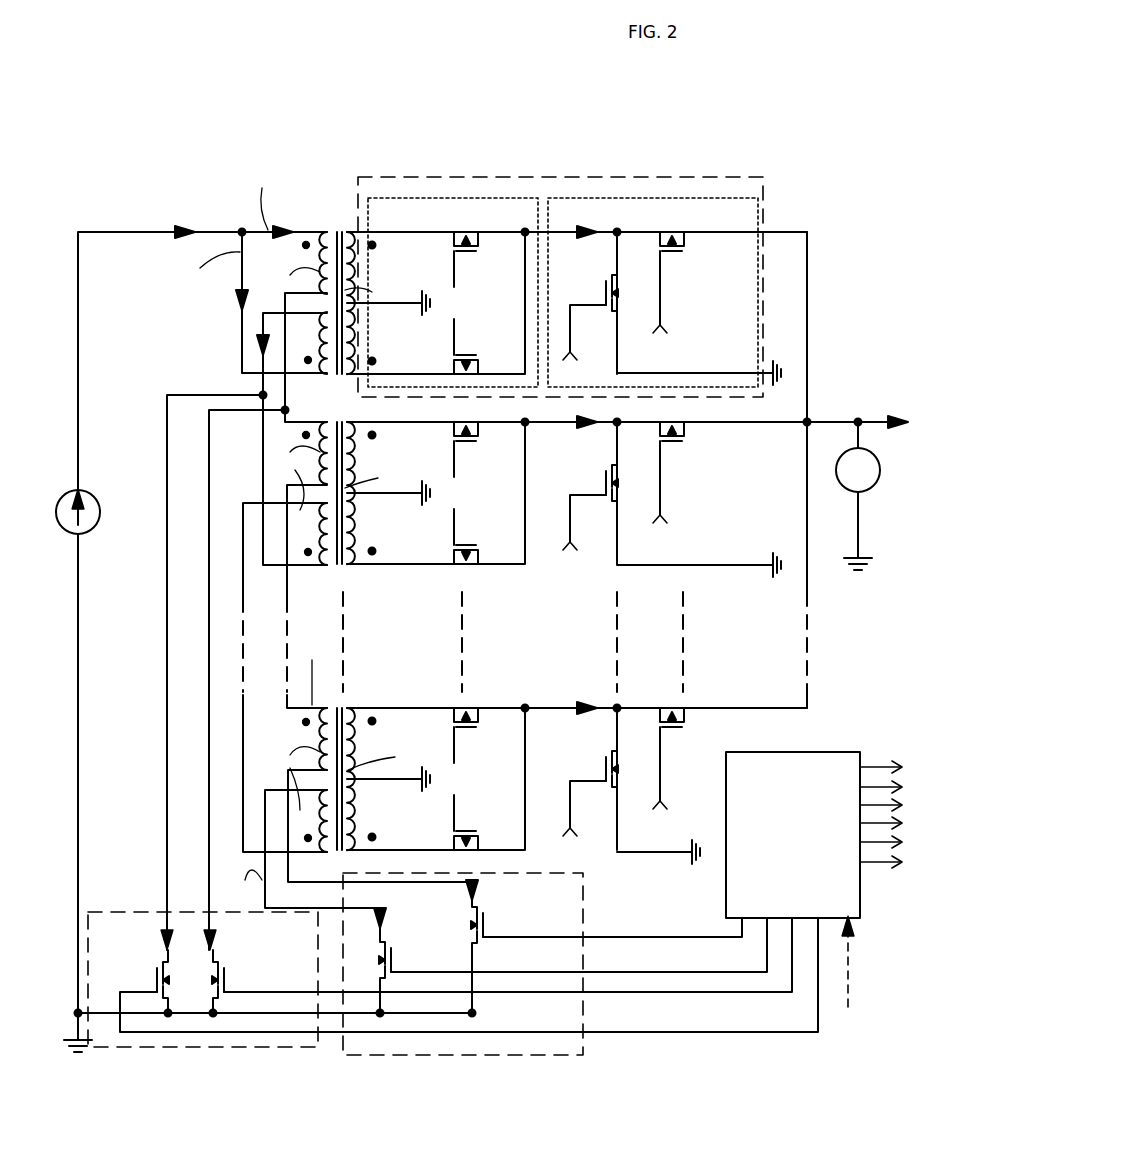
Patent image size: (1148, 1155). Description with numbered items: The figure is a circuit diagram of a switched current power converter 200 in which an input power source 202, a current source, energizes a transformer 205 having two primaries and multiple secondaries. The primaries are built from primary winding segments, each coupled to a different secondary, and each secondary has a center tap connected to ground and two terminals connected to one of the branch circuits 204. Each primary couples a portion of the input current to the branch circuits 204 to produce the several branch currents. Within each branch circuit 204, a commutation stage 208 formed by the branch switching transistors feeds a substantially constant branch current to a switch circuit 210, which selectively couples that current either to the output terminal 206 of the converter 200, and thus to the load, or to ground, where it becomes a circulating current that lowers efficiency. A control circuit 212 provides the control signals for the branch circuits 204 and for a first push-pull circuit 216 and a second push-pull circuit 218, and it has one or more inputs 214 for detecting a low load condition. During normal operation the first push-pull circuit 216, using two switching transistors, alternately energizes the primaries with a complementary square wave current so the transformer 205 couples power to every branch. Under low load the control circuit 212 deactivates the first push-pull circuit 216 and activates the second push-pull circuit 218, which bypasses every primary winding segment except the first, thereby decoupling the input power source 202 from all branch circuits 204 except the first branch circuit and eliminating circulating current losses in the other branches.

The switched current power converter 200 is at (345, 135).
The input power source 202 is at (95, 490).
The branch circuits 204 is at (690, 176).
The transformer 205 is at (342, 225).
The output terminal 206 is at (808, 412).
The commutation circuit 208 is at (440, 196).
The switch circuit 210 is at (766, 190).
The control circuit 212 is at (815, 752).
The inputs 214 is at (852, 972).
The first push-pull circuit 216 is at (497, 1055).
The second push-pull circuit 218 is at (218, 1047).